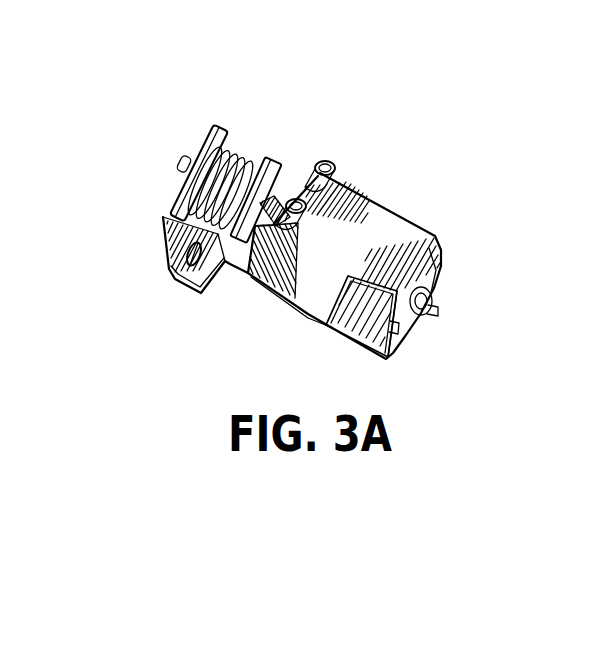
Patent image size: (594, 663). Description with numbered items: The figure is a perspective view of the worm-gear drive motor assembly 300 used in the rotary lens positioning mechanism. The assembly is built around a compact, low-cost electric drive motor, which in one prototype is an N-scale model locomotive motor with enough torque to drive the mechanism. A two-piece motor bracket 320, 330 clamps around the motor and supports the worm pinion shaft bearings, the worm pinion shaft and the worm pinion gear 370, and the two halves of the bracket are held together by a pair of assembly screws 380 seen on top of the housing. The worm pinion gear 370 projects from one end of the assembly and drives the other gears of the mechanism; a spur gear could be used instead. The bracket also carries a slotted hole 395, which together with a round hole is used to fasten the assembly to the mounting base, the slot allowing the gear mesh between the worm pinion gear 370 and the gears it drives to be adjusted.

The worm-gear drive motor assembly 300 is at (411, 203).
The two-piece motor bracket (first piece) 320 is at (222, 262).
The two-piece motor bracket (second piece) 330 is at (430, 227).
The worm pinion gear 370 is at (226, 142).
The assembly screws 380 is at (333, 168).
The slotted hole 395 is at (181, 244).